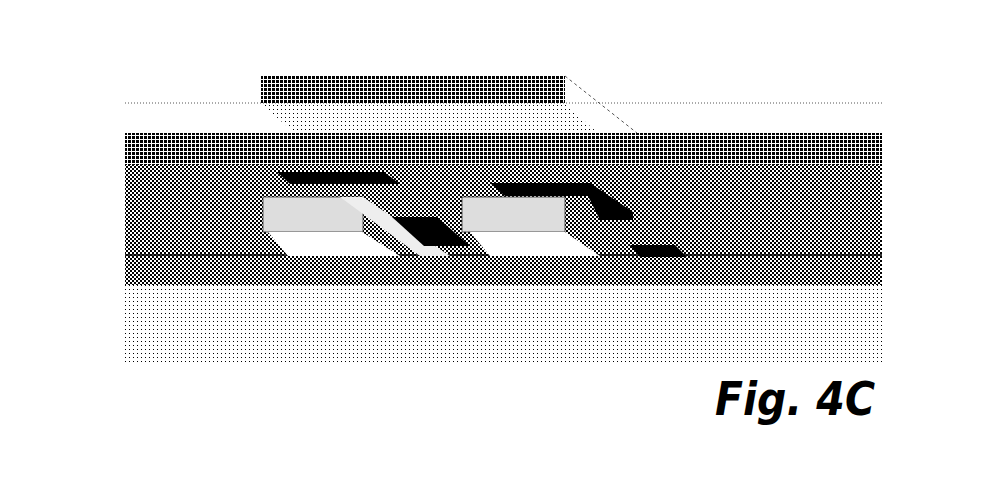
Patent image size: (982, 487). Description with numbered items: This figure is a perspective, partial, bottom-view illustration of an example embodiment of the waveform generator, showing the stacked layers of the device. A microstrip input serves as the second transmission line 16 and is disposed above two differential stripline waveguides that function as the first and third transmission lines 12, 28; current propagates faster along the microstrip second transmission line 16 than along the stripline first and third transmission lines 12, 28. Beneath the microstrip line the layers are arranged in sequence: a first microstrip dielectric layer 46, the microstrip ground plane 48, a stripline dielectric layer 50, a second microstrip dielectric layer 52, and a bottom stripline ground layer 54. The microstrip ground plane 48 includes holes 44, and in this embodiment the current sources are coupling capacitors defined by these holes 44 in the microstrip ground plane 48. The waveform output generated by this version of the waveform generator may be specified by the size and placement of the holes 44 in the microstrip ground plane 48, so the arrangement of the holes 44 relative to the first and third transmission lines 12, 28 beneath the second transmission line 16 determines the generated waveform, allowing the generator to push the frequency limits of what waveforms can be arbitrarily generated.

The second transmission line 16 is at (522, 76).
The first microstrip dielectric layer 46 is at (104, 103).
The microstrip ground plane 48 is at (104, 136).
The stripline dielectric layer 50 is at (104, 166).
The second microstrip dielectric layer 52 is at (104, 258).
The bottom stripline ground layer 54 is at (104, 286).
The holes 44 is at (490, 188).
The first transmission line 12 is at (277, 243).
The third transmission line 28 is at (490, 243).